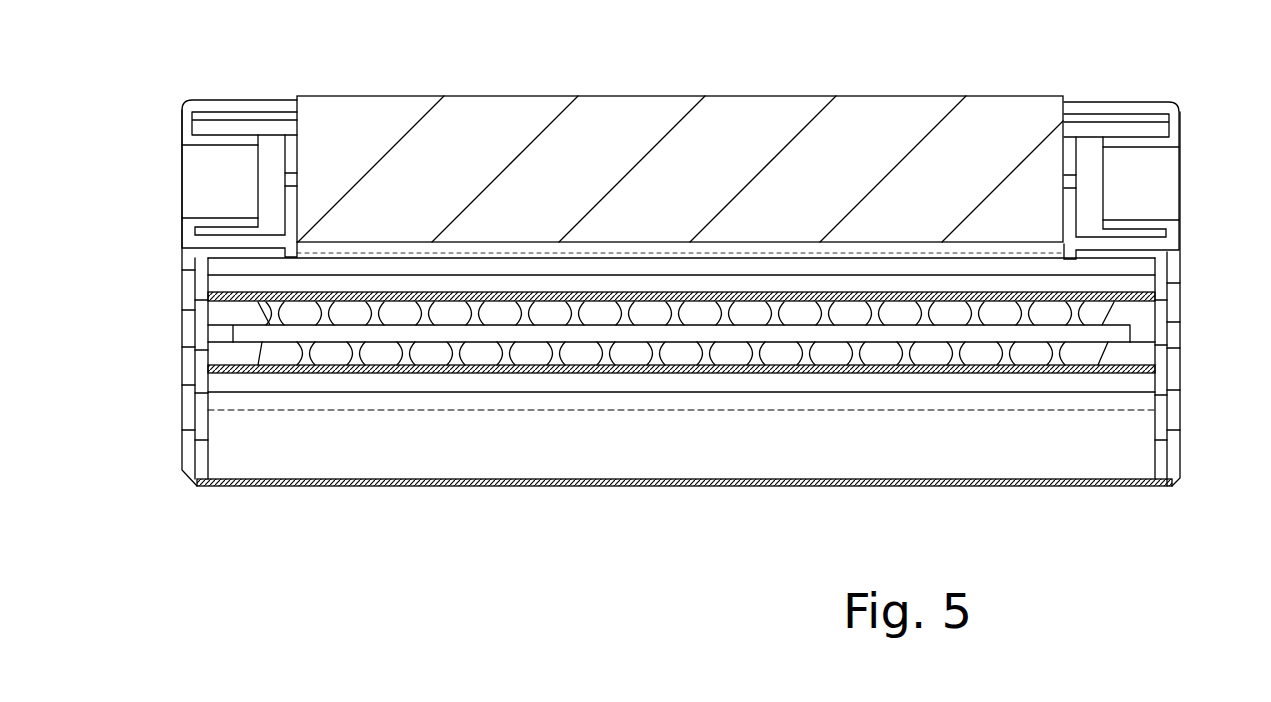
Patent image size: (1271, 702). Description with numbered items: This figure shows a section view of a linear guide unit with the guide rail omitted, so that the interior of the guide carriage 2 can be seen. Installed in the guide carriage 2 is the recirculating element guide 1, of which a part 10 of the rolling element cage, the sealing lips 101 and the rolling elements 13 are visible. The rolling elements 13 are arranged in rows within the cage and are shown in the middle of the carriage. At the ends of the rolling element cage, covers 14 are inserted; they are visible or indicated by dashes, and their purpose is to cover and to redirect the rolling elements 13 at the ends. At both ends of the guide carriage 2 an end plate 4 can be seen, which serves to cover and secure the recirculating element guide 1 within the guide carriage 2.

The recirculating element guide 1 is at (682, 354).
The guide carriage 2 is at (724, 117).
The end plate 4 is at (202, 180).
The part of the rolling element cage 10 is at (435, 448).
The rolling elements 13 is at (337, 348).
The covers 14 is at (198, 480).
The sealing lips 101 is at (655, 303).